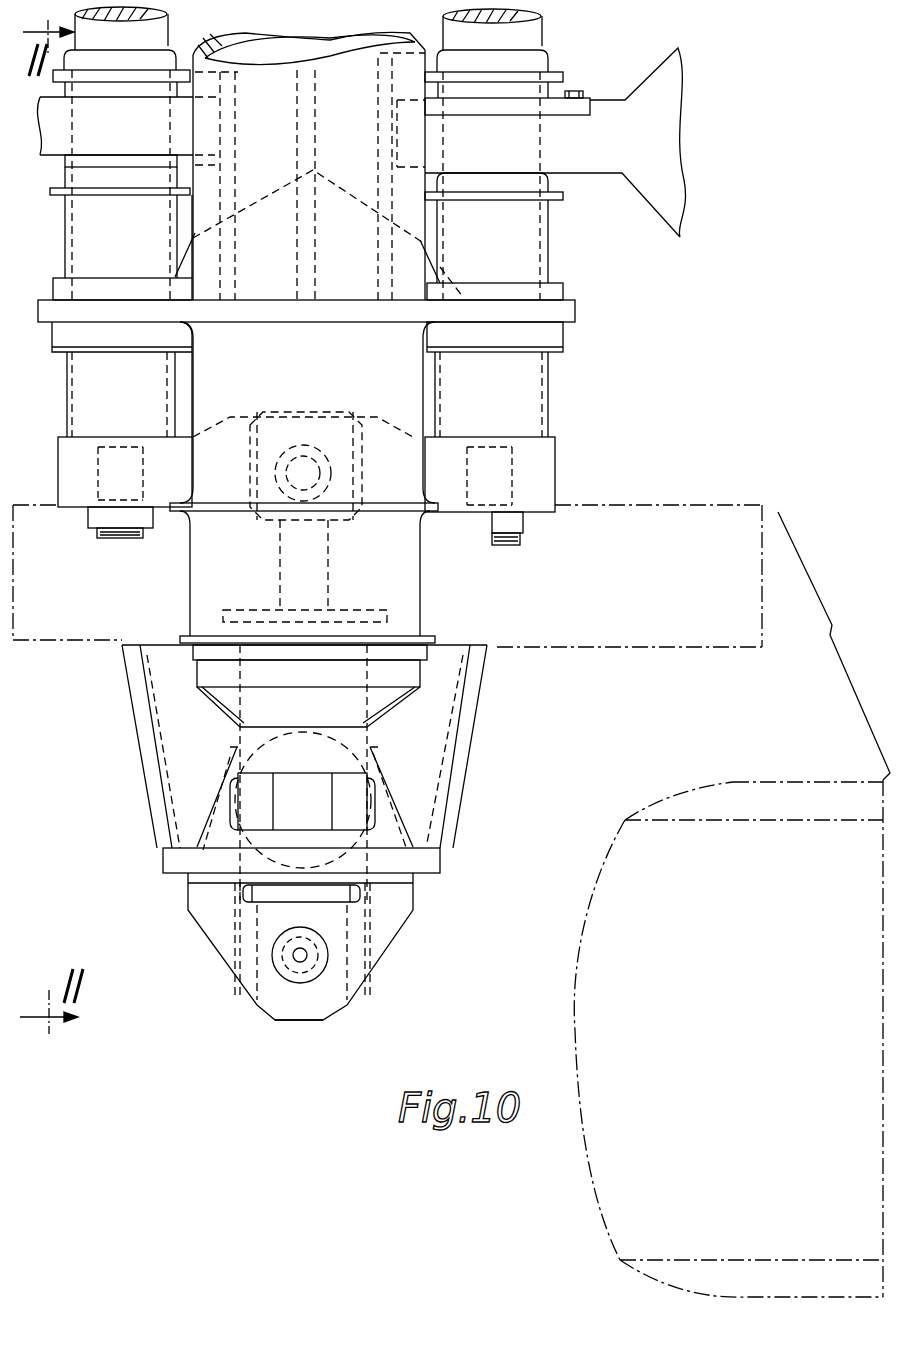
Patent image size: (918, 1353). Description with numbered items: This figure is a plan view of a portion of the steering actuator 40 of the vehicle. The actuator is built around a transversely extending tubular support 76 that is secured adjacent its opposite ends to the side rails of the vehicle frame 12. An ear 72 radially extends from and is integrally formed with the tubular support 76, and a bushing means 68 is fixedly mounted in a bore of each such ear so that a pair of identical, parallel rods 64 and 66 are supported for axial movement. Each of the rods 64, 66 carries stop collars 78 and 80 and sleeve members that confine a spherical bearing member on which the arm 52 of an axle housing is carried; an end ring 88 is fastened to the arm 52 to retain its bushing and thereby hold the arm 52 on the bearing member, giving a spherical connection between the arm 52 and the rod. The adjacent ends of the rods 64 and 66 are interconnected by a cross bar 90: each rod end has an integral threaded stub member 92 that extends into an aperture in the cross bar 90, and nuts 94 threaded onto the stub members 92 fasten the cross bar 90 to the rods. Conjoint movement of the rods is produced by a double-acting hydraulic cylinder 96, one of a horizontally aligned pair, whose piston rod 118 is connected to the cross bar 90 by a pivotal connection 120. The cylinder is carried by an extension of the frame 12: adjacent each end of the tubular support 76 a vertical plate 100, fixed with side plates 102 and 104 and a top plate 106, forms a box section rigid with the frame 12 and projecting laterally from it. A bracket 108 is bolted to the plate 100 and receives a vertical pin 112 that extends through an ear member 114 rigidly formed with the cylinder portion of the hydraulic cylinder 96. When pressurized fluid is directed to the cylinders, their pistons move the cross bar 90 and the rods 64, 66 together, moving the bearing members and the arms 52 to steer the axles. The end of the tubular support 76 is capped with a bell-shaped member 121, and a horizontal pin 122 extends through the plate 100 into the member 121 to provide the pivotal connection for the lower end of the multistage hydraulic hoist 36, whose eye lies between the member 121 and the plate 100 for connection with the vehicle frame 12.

The vehicle frame 12 is at (731, 508).
The multistage double-acting inverted hydraulic hoist 36 is at (293, 727).
The steering actuator 40 is at (215, 976).
The arm 52 is at (147, 143).
The rod 64 is at (85, 236).
The rod 66 is at (535, 232).
The bushing means 68 is at (530, 342).
The ear 72 is at (565, 313).
The tubular support 76 is at (423, 396).
The stop collar 78 is at (165, 78).
The stop collar 80 is at (162, 180).
The end ring 88 is at (105, 160).
The cross bar 90 is at (545, 468).
The threaded stub member 92 is at (112, 545).
The nut 94 is at (98, 528).
The double-acting hydraulic cylinder 96 is at (348, 604).
The vertical plate 100 is at (165, 858).
The side plate 102 is at (470, 705).
The side plate 104 is at (147, 745).
The top plate 106 is at (180, 767).
The bracket 108 is at (390, 920).
The vertical pin 112 is at (303, 955).
The ear member 114 is at (312, 1020).
The piston rod 118 is at (282, 540).
The pivotal connection 120 is at (320, 455).
The bell-shaped member 121 is at (220, 700).
The horizontal pin 122 is at (332, 793).